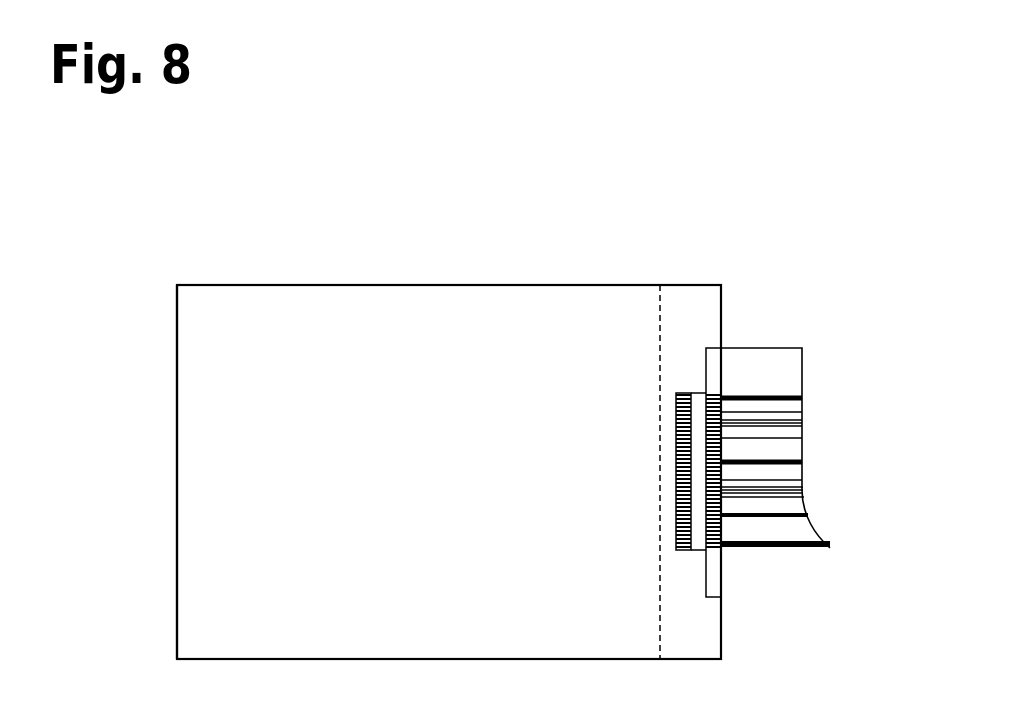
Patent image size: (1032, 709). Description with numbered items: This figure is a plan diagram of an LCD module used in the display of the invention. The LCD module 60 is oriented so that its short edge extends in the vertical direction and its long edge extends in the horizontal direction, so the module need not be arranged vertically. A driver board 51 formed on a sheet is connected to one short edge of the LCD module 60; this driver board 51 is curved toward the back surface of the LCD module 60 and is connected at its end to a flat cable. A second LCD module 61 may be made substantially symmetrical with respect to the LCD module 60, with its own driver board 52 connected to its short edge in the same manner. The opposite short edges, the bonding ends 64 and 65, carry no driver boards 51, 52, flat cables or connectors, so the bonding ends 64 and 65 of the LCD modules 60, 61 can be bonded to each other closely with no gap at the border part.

The LCD module 60 is at (620, 247).
The LCD module 61 is at (462, 425).
The driver board 51 is at (806, 373).
The driver board 52 is at (826, 441).
The bonding end 64 is at (176, 446).
The bonding end 65 is at (109, 472).